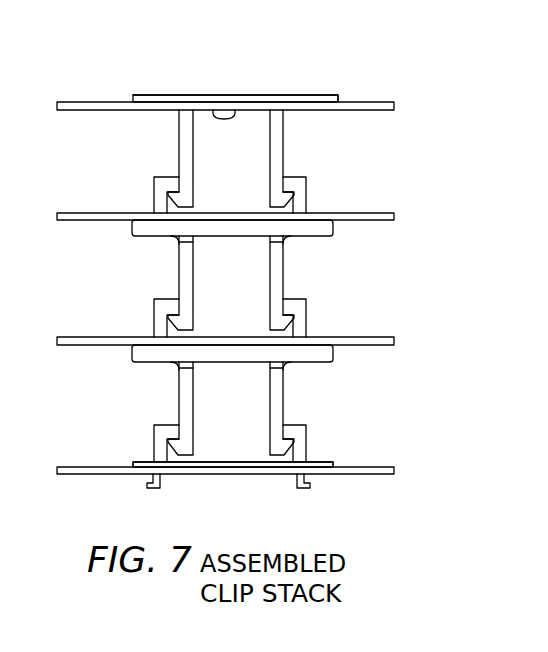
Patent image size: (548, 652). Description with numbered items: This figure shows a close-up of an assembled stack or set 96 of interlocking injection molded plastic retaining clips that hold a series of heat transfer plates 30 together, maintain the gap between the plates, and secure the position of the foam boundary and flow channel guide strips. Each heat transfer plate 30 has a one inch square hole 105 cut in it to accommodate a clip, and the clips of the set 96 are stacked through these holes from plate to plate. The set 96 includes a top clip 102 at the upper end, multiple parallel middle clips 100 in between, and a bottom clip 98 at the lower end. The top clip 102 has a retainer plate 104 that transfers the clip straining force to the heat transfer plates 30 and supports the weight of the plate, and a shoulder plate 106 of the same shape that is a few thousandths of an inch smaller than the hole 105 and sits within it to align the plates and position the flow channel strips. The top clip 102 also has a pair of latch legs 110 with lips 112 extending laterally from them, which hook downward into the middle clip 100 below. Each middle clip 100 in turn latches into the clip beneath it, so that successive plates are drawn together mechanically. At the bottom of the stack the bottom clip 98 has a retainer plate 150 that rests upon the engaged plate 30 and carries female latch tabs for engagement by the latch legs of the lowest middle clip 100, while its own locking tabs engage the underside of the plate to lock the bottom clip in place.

The heat transfer plate 30 is at (107, 112).
The assembled stack or set of interlocking clips 96 is at (408, 80).
The bottom clip 98 is at (251, 442).
The middle clip 100 is at (283, 271).
The top clip 102 is at (260, 124).
The retainer plate 104 is at (145, 95).
The hole 105 is at (297, 97).
The shoulder plate 106 is at (238, 110).
The latch leg 110 is at (196, 163).
The lip 112 is at (270, 168).
The retainer plate 150 is at (150, 462).